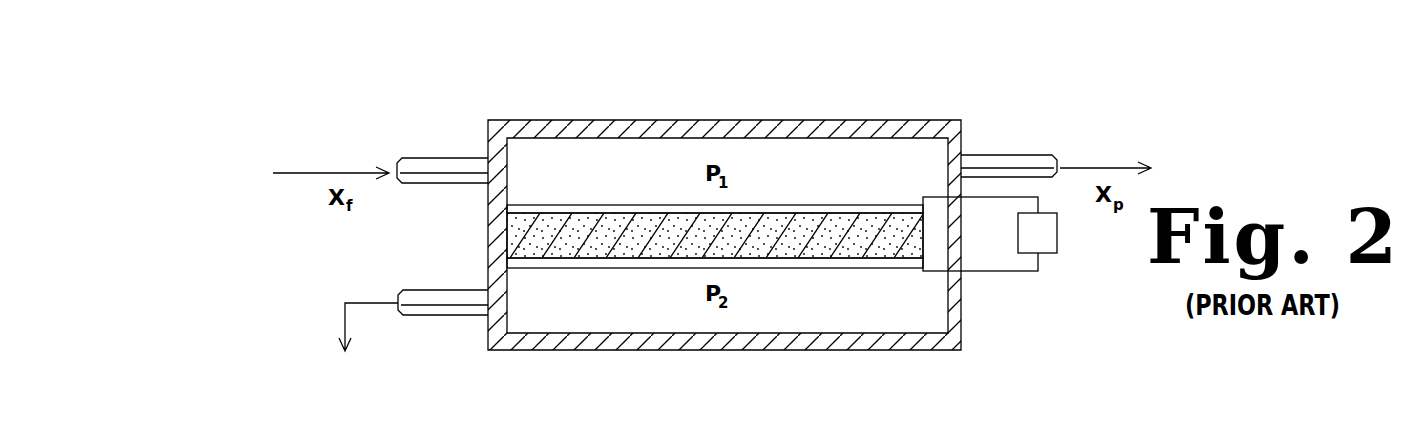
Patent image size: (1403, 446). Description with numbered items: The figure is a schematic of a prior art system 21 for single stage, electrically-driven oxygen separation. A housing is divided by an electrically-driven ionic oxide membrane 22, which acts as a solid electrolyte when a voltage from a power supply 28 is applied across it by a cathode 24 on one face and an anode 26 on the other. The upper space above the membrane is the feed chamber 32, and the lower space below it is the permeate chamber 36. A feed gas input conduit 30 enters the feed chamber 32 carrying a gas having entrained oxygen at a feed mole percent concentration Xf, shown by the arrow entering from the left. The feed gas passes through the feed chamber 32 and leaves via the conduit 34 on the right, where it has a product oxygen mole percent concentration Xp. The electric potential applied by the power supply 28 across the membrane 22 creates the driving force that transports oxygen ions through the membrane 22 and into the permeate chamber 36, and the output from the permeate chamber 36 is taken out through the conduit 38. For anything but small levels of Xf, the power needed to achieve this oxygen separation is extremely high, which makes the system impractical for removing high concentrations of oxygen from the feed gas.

The prior art system 21 is at (864, 92).
The ionic oxide membrane 22 is at (780, 213).
The cathode 24 is at (870, 204).
The anode 26 is at (870, 268).
The power supply 28 is at (1045, 240).
The feed gas input conduit 30 is at (441, 167).
The feed chamber 32 is at (660, 187).
The conduit 34 is at (977, 162).
The permeate chamber 36 is at (747, 312).
The conduit 38 is at (462, 300).